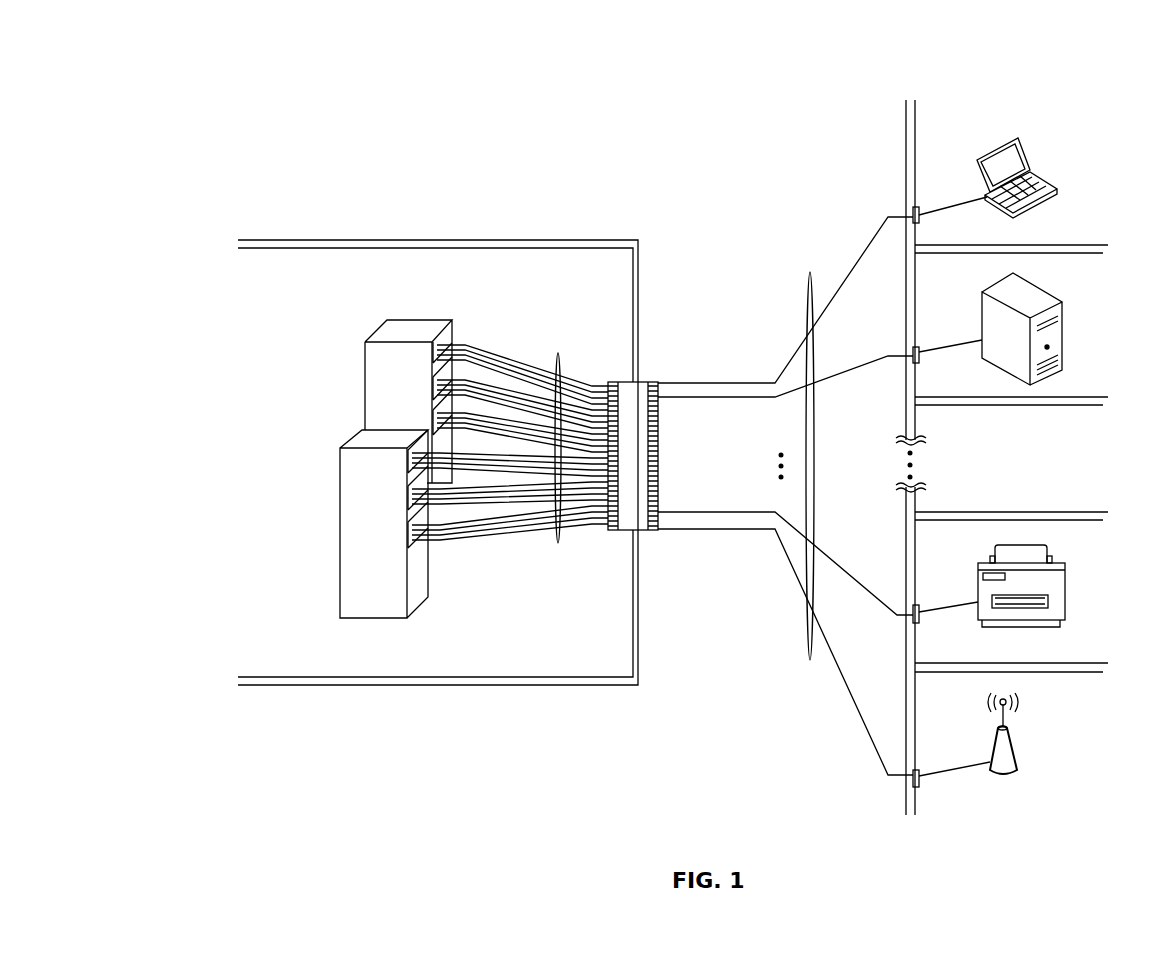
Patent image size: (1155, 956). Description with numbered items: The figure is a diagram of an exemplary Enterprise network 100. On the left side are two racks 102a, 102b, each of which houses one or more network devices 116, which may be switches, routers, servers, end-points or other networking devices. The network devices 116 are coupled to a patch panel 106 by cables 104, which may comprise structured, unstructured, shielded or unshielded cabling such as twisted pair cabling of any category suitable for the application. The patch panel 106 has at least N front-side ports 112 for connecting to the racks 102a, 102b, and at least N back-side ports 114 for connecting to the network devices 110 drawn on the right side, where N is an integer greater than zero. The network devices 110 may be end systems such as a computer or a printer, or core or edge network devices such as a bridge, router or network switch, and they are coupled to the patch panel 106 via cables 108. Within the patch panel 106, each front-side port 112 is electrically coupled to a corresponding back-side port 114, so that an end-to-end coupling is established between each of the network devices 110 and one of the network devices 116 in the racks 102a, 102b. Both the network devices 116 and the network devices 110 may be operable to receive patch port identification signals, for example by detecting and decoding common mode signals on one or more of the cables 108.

The network 100 is at (240, 94).
The rack 102a is at (374, 340).
The rack 102b is at (356, 441).
The cables 104 is at (558, 360).
The patch panel 106 is at (656, 465).
The cables 108 is at (811, 278).
The network devices 110 is at (1023, 455).
The front-side ports 112 is at (607, 540).
The back-side ports 114 is at (660, 372).
The network devices 116 is at (407, 445).